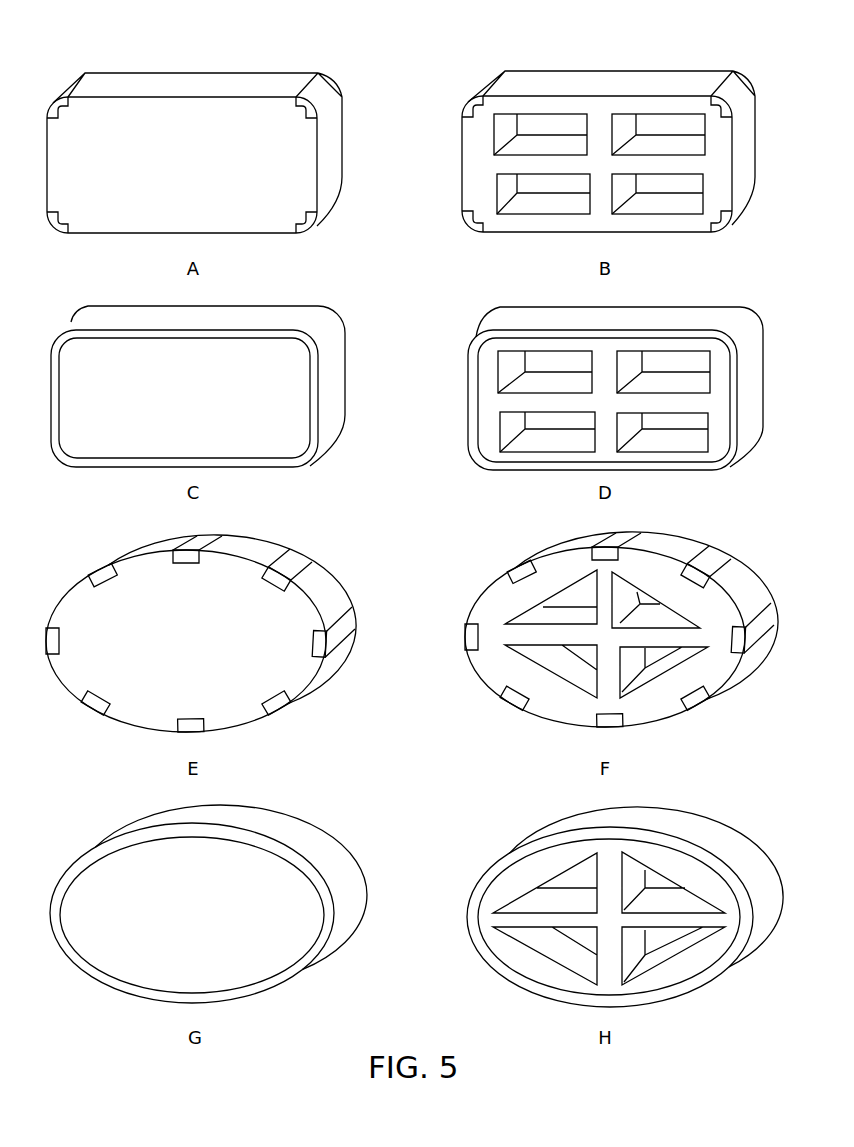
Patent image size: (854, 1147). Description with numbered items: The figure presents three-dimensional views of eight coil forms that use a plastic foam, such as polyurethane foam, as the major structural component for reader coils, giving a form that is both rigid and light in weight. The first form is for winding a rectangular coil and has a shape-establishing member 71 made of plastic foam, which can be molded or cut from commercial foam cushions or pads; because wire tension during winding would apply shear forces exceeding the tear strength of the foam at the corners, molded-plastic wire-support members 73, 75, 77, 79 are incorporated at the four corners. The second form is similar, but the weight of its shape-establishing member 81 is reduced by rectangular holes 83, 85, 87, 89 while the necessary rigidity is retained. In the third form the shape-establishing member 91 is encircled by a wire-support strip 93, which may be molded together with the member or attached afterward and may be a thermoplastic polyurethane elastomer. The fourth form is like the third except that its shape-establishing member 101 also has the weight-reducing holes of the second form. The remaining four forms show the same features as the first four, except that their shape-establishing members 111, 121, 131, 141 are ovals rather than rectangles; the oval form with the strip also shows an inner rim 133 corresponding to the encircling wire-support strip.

The shape-establishing member 71 is at (178, 73).
The molded-plastic wire-support member 73 is at (61, 108).
The molded-plastic wire-support member 75 is at (304, 108).
The molded-plastic wire-support member 77 is at (62, 207).
The molded-plastic wire-support member 79 is at (302, 207).
The shape-establishing member 81 is at (603, 71).
The rectangular hole 83 is at (494, 143).
The rectangular hole 85 is at (705, 148).
The rectangular hole 87 is at (497, 200).
The rectangular hole 89 is at (705, 202).
The shape-establishing member 91 is at (180, 355).
The wire-support strip 93 is at (205, 458).
The shape-establishing member 101 is at (602, 353).
The shape-establishing member 111 is at (163, 549).
The shape-establishing member 121 is at (580, 545).
The shape-establishing member 131 is at (200, 875).
The inner elliptical rim 133 is at (225, 993).
The shape-establishing member 141 is at (660, 867).